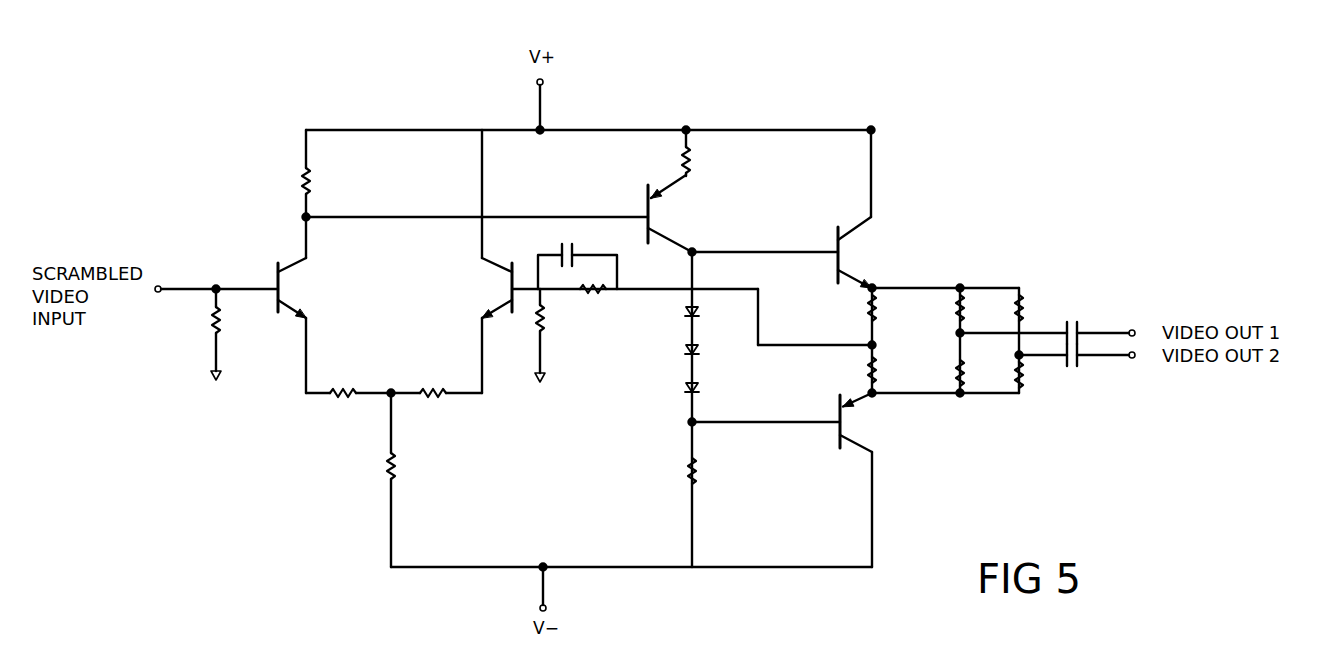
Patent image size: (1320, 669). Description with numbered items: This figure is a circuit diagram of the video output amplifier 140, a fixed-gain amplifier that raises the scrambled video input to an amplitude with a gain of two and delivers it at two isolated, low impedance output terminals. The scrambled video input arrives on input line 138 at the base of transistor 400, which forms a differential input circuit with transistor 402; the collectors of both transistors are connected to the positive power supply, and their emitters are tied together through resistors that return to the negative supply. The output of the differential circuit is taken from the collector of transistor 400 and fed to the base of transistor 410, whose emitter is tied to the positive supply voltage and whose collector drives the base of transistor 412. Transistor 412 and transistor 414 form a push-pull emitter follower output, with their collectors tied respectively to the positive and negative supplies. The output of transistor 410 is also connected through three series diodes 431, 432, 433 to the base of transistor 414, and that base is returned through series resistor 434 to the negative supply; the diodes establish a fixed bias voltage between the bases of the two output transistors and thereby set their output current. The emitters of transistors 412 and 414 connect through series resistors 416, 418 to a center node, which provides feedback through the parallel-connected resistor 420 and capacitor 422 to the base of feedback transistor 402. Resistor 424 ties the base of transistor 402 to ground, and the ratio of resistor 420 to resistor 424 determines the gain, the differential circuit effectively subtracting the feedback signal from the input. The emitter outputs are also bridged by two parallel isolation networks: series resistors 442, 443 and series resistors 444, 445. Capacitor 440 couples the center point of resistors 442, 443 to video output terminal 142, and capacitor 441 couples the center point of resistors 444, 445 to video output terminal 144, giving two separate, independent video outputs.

The scrambled video input line 138 is at (214, 289).
The video output amplifier 140 is at (946, 100).
The isolated video output terminal 142 is at (1135, 328).
The isolated video output terminal 144 is at (1136, 355).
The transistor 400 is at (298, 262).
The feedback transistor 402 is at (505, 298).
The transistor 410 is at (664, 232).
The transistor 412 is at (848, 275).
The transistor 414 is at (858, 434).
The series resistor 416 is at (868, 306).
The series resistor 418 is at (868, 378).
The resistor 420 is at (598, 296).
The capacitor 422 is at (578, 258).
The resistor 424 is at (548, 320).
The diode 431 is at (690, 311).
The diode 432 is at (690, 349).
The diode 433 is at (690, 388).
The series resistor 434 is at (699, 470).
The capacitor 440 is at (1080, 327).
The capacitor 441 is at (1065, 360).
The series resistor 442 is at (965, 302).
The series resistor 443 is at (967, 375).
The series resistor 444 is at (1025, 306).
The series resistor 445 is at (1027, 375).